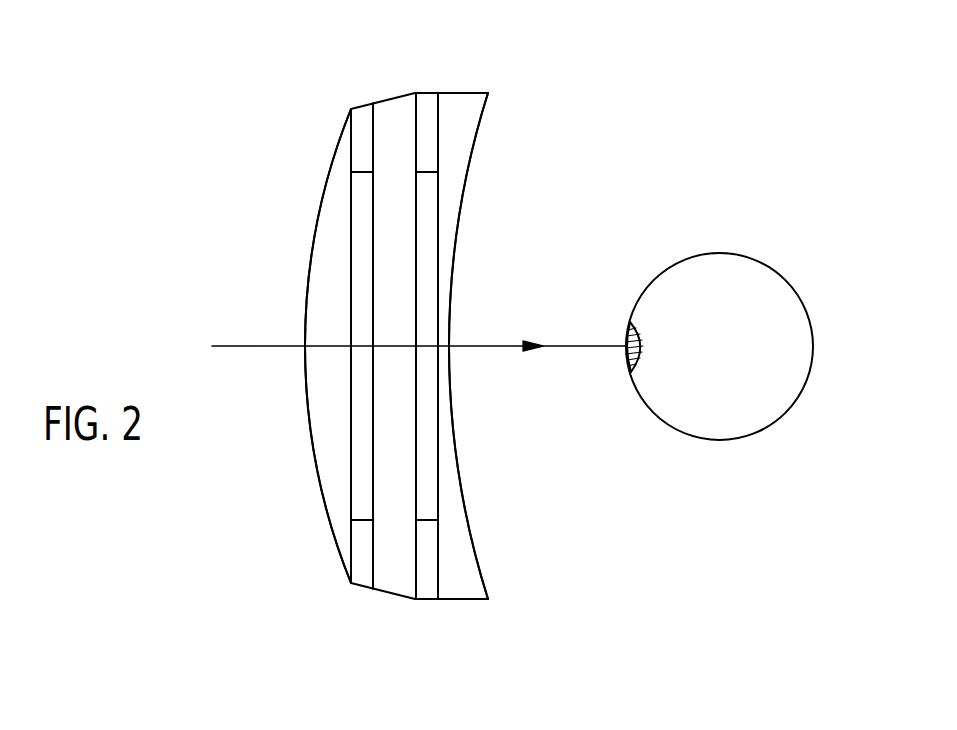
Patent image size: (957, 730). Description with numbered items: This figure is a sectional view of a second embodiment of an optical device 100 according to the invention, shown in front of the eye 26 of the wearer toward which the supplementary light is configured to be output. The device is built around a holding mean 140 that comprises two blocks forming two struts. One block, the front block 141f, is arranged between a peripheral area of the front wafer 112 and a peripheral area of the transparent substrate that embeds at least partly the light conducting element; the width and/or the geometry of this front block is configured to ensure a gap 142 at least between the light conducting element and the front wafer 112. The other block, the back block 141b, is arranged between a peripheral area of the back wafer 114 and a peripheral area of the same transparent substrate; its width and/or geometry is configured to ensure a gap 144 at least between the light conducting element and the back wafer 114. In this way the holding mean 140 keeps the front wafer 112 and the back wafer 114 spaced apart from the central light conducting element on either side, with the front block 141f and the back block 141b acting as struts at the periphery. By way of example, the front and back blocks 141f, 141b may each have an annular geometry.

The optical device 100 is at (237, 130).
The front wafer 112 is at (328, 258).
The back wafer 114 is at (457, 561).
The holding mean 140 is at (358, 594).
The front block 141f is at (362, 136).
The back block 141b is at (427, 128).
The gap 142 is at (365, 313).
The gap 144 is at (427, 267).
The eye 26 is at (795, 322).